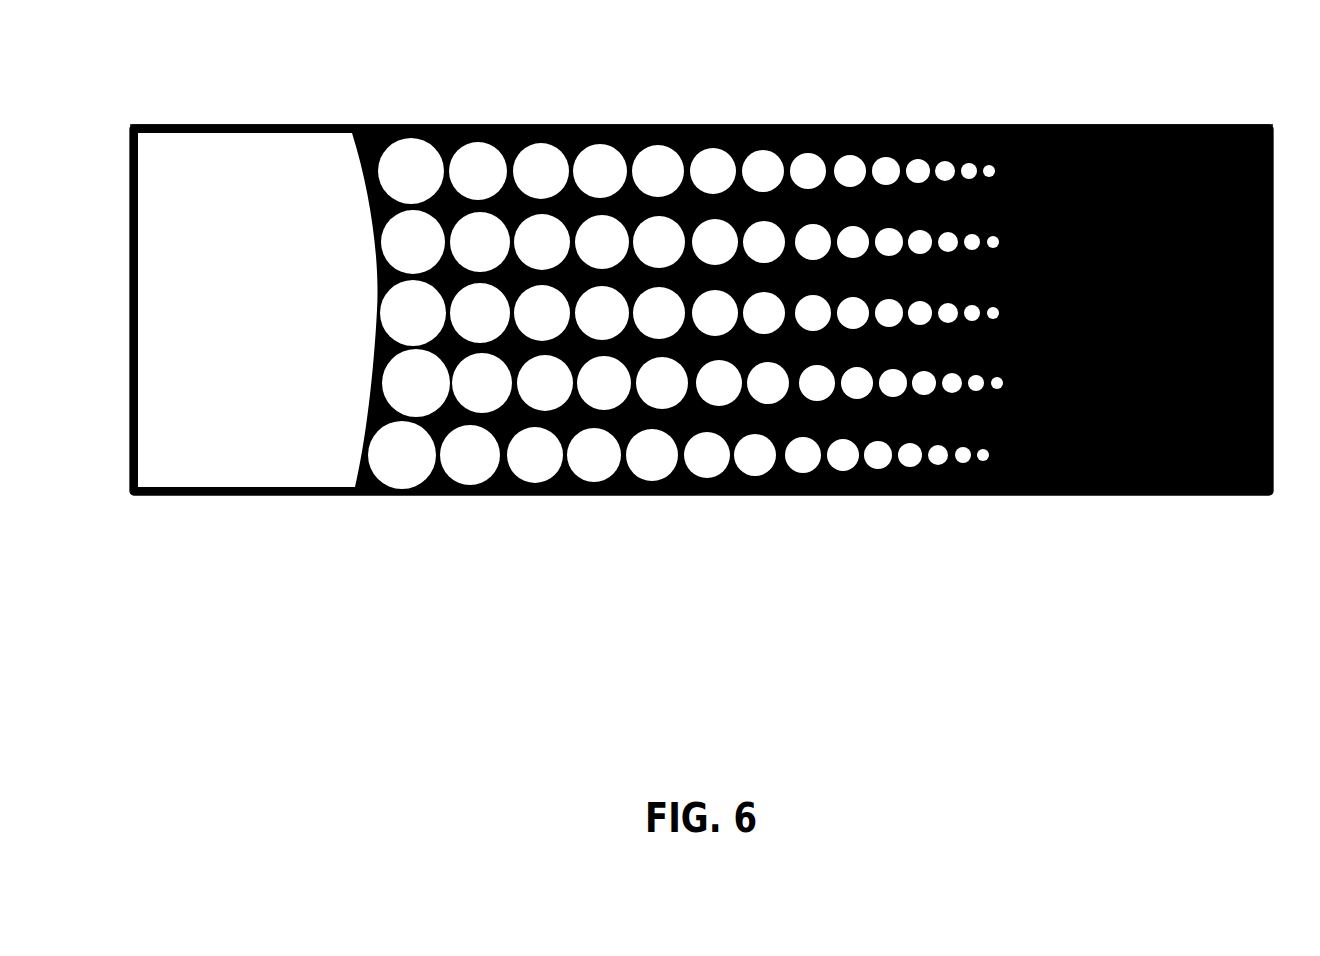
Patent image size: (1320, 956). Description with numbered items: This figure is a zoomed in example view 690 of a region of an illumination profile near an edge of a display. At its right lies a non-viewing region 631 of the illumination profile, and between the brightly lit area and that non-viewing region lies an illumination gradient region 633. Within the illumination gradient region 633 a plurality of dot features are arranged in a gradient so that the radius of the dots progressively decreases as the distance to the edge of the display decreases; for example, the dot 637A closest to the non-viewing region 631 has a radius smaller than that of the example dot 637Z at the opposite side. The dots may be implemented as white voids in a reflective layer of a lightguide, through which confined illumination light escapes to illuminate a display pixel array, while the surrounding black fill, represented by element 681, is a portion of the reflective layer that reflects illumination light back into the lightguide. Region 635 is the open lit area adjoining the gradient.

The non-viewing region 631 is at (1159, 340).
The illumination gradient region 633 is at (353, 110).
The transparent region 635 is at (311, 324).
The dot 637A is at (1014, 242).
The dot 637Z is at (434, 250).
The reflective layer portion 681 is at (1118, 106).
The zoomed in example view 690 is at (132, 127).